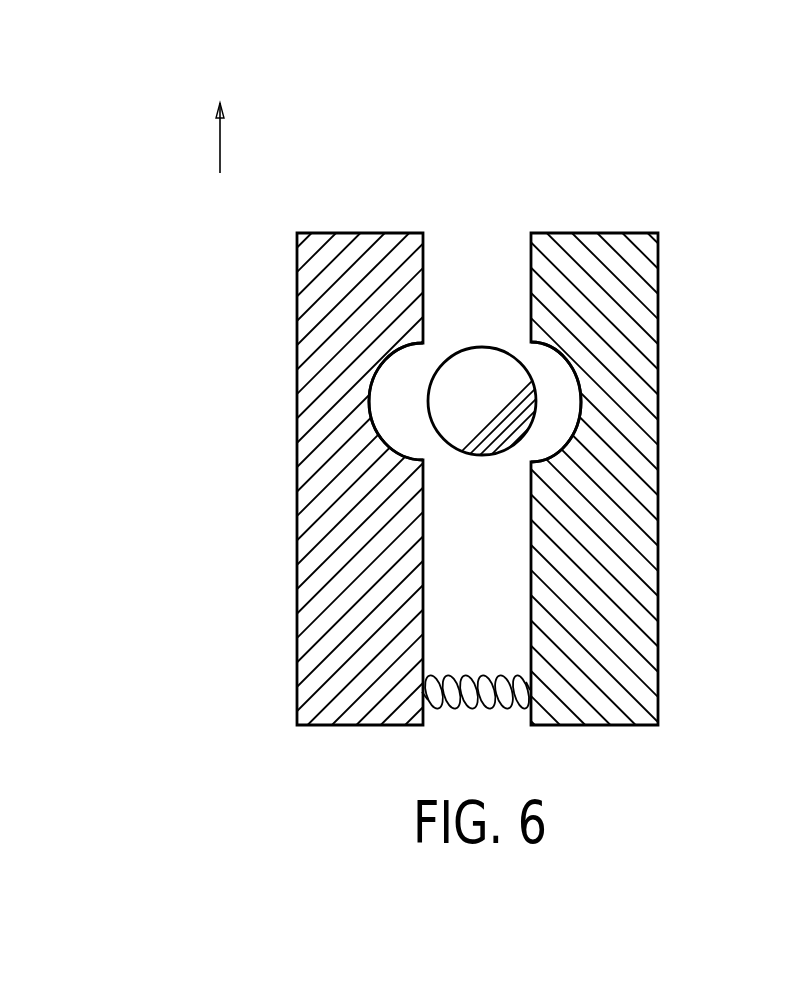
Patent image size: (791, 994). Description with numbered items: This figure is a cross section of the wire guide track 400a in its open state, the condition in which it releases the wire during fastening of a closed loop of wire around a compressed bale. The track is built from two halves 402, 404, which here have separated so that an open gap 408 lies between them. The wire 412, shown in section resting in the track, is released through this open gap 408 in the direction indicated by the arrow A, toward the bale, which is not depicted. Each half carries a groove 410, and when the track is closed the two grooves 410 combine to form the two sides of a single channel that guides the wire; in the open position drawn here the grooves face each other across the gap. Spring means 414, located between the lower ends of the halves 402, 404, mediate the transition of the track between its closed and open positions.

The wire guide track 400a is at (395, 400).
The half 402 is at (318, 667).
The half 404 is at (648, 690).
The open gap 408 is at (500, 582).
The grooves 410 is at (380, 393).
The wire 412 is at (478, 347).
The spring means 414 is at (480, 710).
The arrow A is at (218, 148).